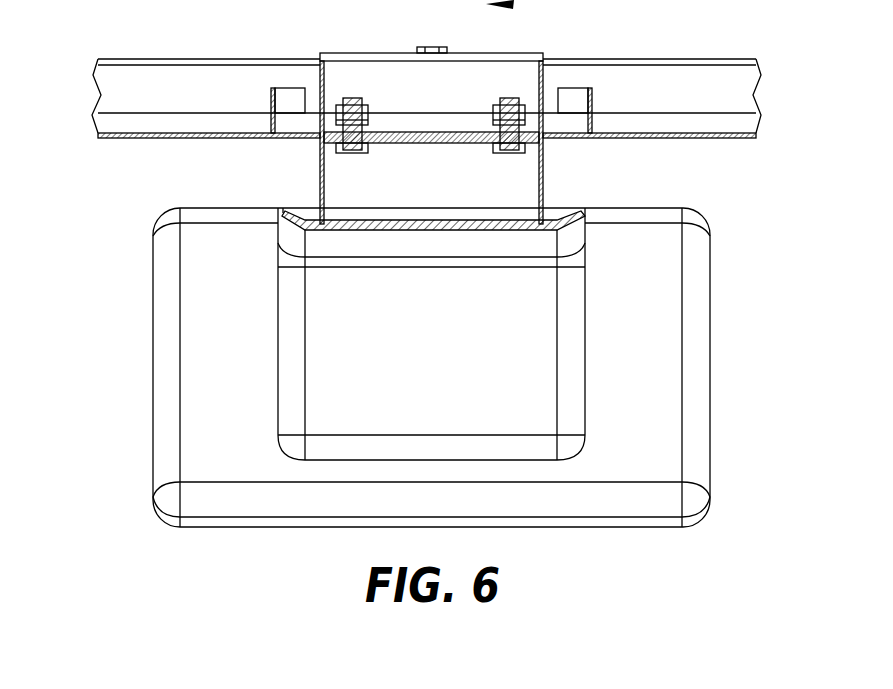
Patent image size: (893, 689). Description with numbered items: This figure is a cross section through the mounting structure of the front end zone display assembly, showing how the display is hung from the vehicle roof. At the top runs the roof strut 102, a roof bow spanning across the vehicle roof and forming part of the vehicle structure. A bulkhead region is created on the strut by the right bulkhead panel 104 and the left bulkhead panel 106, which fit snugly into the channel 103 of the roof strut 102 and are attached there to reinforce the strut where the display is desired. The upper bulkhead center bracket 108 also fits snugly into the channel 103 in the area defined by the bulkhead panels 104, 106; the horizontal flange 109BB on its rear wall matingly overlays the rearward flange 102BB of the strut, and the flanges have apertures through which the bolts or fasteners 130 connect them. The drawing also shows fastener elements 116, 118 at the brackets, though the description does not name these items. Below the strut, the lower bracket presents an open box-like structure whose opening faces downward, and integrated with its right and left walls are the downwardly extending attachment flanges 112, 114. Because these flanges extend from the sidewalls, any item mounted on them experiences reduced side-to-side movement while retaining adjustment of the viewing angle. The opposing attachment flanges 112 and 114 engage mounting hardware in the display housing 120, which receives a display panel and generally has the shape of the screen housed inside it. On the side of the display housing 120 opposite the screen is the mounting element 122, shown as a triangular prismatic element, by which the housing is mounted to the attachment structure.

The roof strut 102 is at (750, 88).
The rearward flange 102BB is at (625, 59).
The channel 103 is at (667, 134).
The right bulkhead panel 104 is at (270, 107).
The left bulkhead panel 106 is at (592, 99).
The upper bulkhead center bracket 108 is at (392, 130).
The horizontal flange 109BB is at (524, 56).
The attachment flange 112 is at (318, 183).
The attachment flange 114 is at (545, 185).
The nut 116 is at (508, 156).
The second fastener bolt 118 is at (492, 118).
The display housing 120 is at (710, 331).
The mounting element 122 is at (431, 334).
The fasteners 130 is at (429, 47).